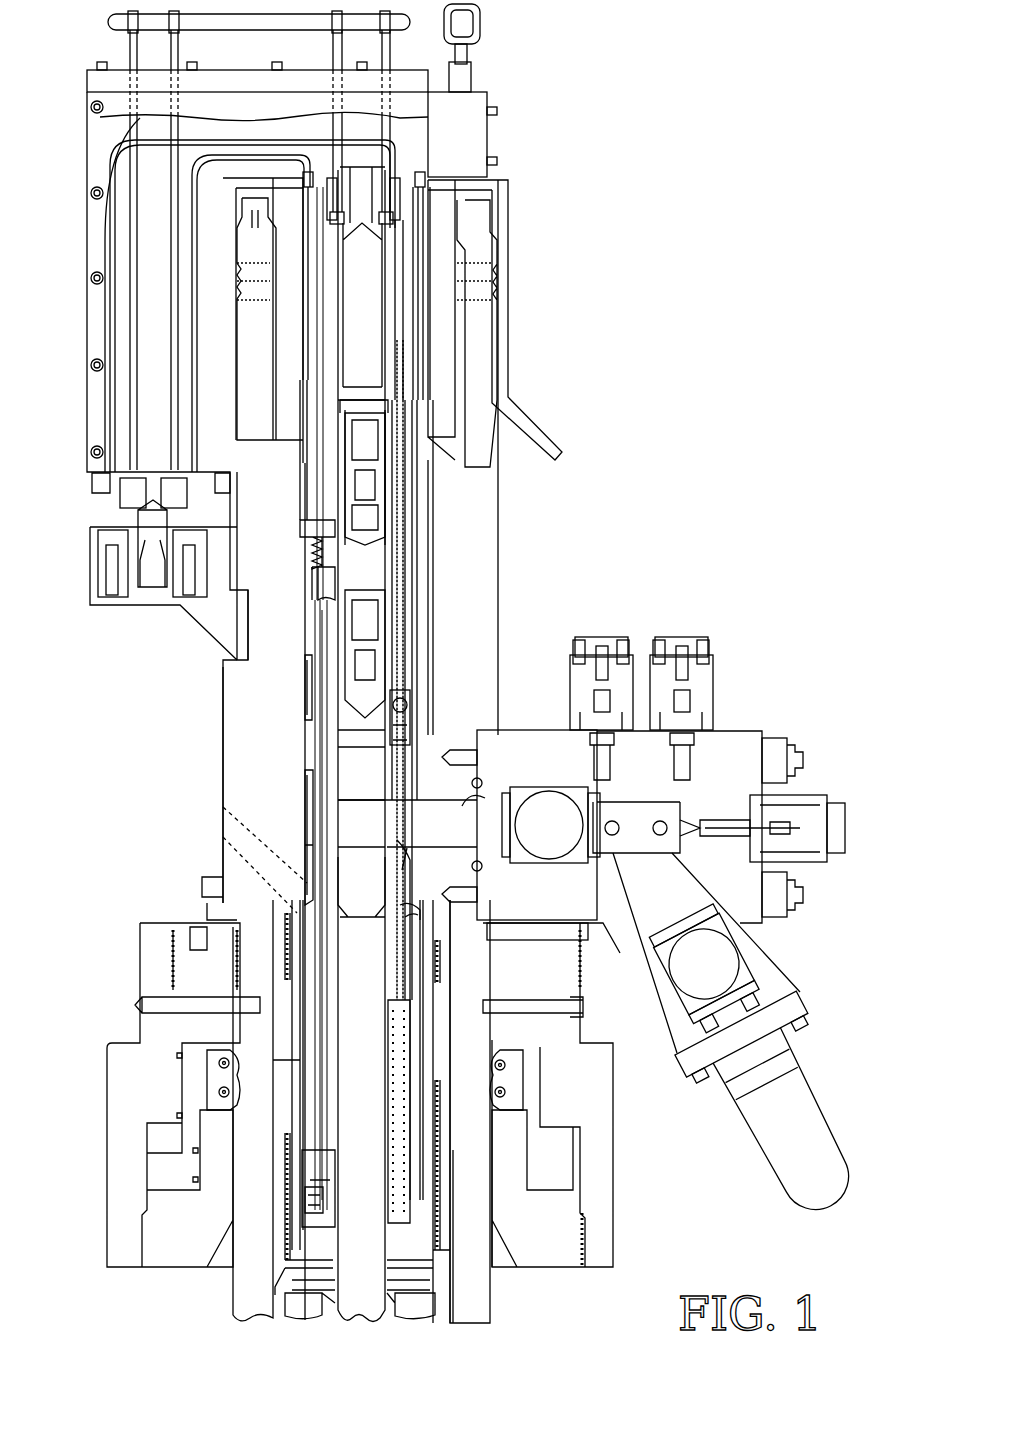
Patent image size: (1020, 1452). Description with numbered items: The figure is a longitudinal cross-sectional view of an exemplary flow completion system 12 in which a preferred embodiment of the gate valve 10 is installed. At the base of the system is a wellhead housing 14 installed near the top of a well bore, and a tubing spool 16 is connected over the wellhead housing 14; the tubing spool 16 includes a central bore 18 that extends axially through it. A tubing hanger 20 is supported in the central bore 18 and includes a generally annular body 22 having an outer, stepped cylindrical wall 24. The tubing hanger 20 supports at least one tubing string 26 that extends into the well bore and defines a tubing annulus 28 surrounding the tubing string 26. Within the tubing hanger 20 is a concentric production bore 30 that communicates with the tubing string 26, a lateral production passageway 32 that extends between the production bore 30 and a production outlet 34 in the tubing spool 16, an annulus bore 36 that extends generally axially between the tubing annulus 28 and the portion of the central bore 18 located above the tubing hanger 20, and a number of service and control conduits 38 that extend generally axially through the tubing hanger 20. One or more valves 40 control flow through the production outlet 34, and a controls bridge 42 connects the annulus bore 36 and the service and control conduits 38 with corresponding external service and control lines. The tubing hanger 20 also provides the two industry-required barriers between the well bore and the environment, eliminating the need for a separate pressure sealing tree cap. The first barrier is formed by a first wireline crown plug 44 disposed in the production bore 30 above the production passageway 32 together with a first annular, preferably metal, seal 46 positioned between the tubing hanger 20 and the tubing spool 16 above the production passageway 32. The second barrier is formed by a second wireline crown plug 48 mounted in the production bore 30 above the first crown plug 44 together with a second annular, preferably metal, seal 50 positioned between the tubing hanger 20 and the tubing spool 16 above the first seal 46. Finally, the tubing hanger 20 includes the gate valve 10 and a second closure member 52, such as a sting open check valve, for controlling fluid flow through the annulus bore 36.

The gate valve 10 is at (425, 727).
The flow completion system 12 is at (292, 453).
The wellhead housing 14 is at (492, 1310).
The tubing spool 16 is at (222, 735).
The central bore 18 is at (440, 620).
The tubing hanger 20 is at (399, 541).
The annular body 22 is at (425, 522).
The stepped cylindrical wall 24 is at (435, 548).
The tubing string 26 is at (333, 1240).
The tubing annulus 28 is at (432, 1255).
The production bore 30 is at (372, 894).
The lateral production passageway 32 is at (410, 850).
The production outlet 34 is at (480, 795).
The annulus bore 36 is at (318, 590).
The service and control conduits 38 is at (322, 722).
The valves 40 is at (563, 838).
The controls bridge 42 is at (522, 300).
The first wireline crown plug 44 is at (400, 692).
The first annular seal 46 is at (306, 780).
The second wireline crown plug 48 is at (388, 502).
The second annular seal 50 is at (306, 665).
The second closure member 52 is at (297, 530).